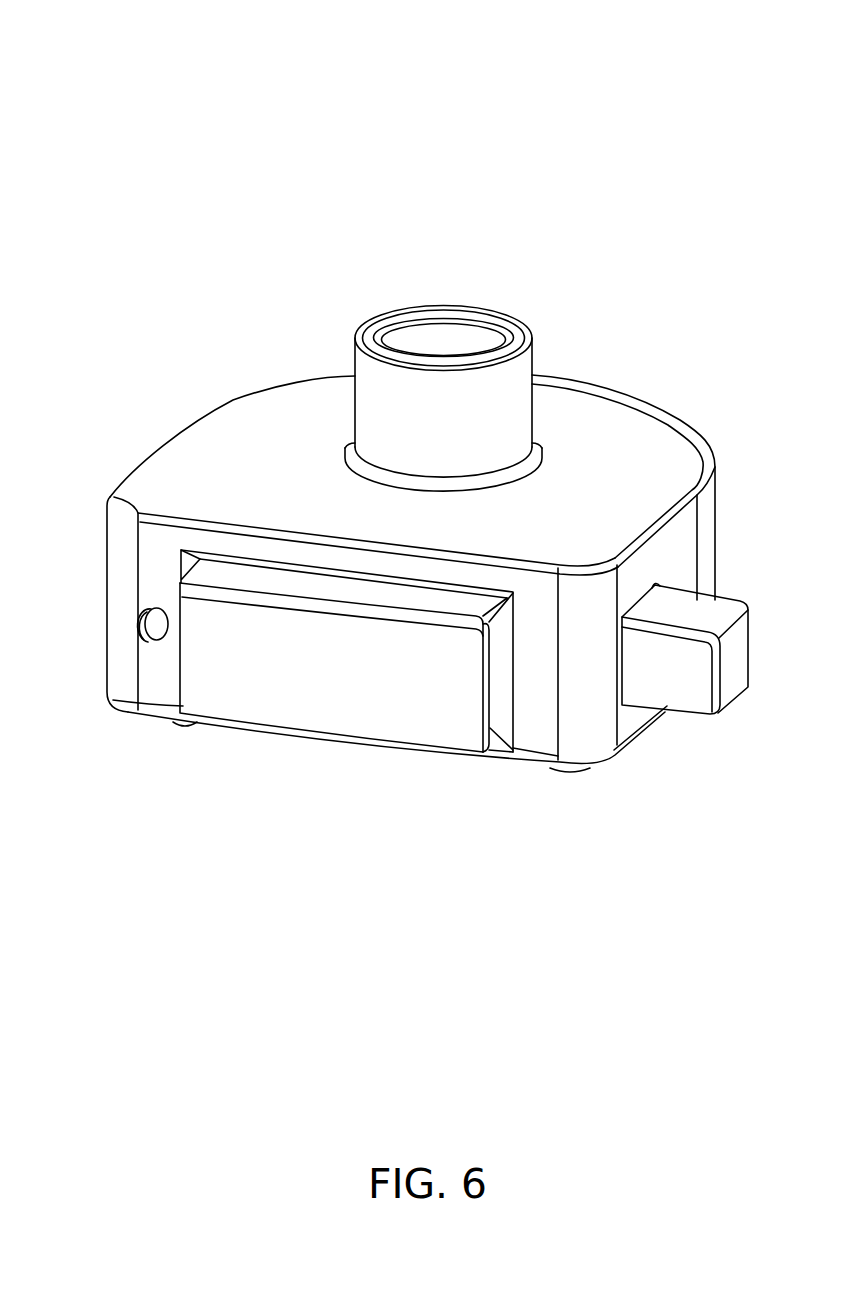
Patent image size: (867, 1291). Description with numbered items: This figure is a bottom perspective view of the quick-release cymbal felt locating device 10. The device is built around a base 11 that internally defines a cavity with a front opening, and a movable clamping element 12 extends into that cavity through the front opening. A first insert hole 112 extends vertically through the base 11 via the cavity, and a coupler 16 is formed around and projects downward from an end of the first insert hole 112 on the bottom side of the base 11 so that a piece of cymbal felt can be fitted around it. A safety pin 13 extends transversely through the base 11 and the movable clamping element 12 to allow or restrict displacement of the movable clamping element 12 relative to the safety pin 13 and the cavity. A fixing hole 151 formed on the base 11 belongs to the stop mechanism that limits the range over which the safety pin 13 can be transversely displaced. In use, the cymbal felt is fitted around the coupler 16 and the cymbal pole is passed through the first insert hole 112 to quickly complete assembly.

The quick-release cymbal felt locating device 10 is at (444, 30).
The base 11 is at (236, 400).
The first insert hole 112 is at (408, 326).
The coupler 16 is at (535, 405).
The movable clamping element 12 is at (337, 747).
The fixing hole 151 is at (145, 642).
The safety pin 13 is at (737, 698).